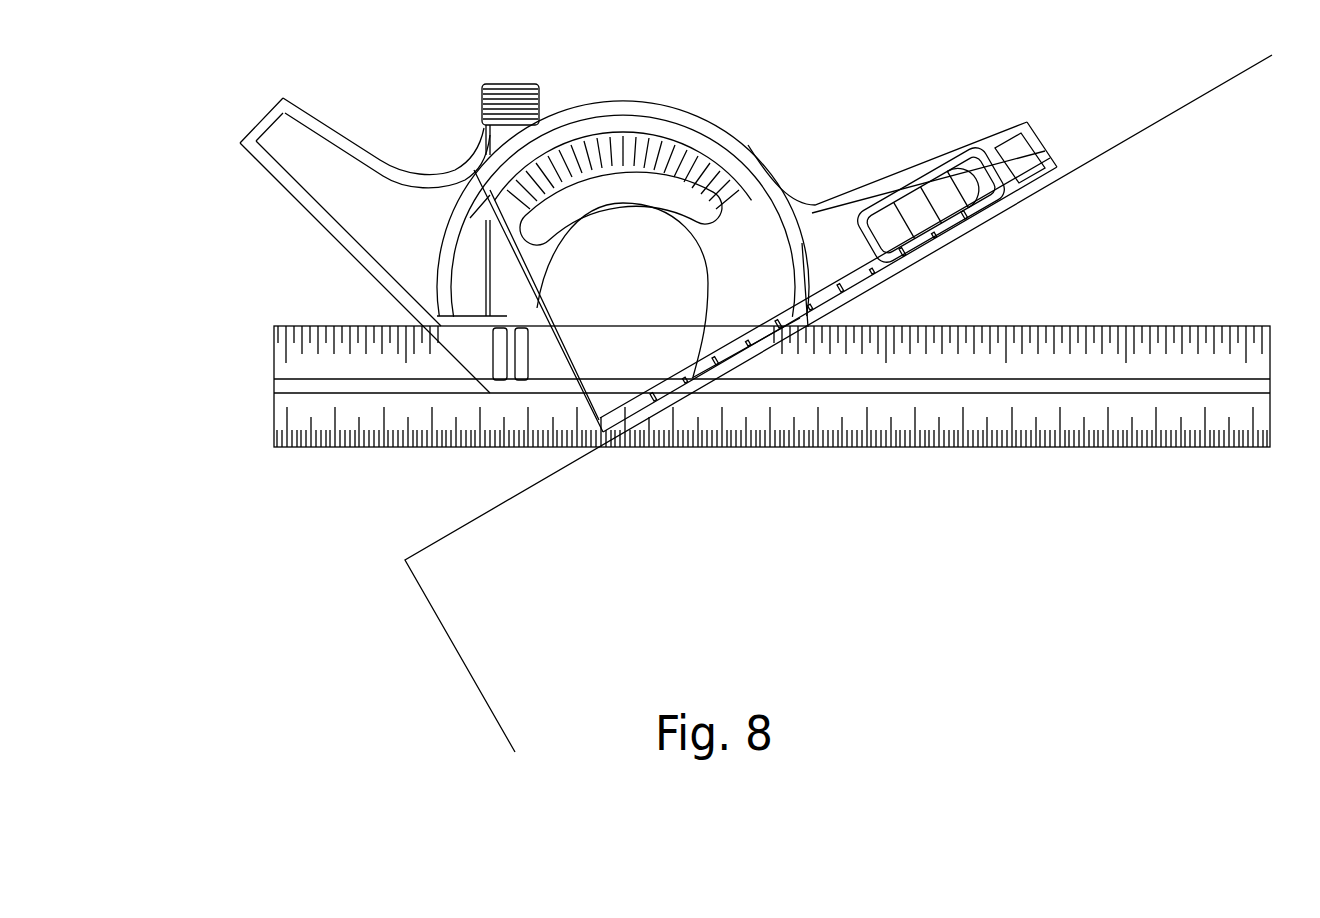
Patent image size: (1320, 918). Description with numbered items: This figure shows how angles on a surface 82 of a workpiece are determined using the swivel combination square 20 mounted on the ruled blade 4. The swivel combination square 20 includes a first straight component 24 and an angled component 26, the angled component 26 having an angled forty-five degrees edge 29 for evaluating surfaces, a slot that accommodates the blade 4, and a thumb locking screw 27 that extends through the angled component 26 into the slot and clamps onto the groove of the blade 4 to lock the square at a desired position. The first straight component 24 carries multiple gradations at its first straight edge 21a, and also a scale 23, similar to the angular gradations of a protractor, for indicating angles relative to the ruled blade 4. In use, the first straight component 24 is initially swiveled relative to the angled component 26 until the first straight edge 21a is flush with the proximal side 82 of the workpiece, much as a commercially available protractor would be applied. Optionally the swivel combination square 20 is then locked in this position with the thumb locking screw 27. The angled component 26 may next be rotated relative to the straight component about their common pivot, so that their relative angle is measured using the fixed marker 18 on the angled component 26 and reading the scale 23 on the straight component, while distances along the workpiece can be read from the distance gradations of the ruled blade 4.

The ruled blade 4 is at (402, 448).
The fixed marker 18 is at (560, 118).
The swivel combination square 20 is at (839, 245).
The first straight edge 21a is at (975, 222).
The scale 23 is at (703, 152).
The first straight component 24 is at (823, 220).
The angled component 26 is at (320, 158).
The thumb locking screw 27 is at (510, 84).
The angled 45 degrees edge 29 is at (313, 222).
The surface of a workpiece 82 is at (470, 533).